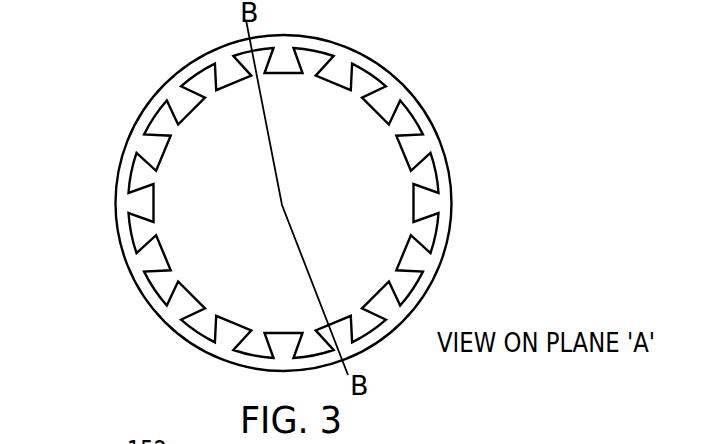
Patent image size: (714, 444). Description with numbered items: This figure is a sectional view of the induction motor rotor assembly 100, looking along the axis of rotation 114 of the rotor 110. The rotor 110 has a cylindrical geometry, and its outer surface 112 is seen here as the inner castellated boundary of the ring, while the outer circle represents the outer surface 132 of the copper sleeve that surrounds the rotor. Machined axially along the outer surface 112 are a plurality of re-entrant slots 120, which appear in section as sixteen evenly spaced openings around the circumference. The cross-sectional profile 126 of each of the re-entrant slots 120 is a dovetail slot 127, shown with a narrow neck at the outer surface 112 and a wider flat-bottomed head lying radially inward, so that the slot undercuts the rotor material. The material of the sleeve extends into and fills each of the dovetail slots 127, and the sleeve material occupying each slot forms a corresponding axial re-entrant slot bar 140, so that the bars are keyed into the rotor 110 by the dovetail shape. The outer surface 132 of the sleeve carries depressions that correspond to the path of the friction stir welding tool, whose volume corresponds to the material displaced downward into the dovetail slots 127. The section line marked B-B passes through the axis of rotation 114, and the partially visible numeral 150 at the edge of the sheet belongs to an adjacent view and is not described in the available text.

The induction motor rotor assembly 100 is at (570, 428).
The rotor 110 is at (348, 117).
The outer surface 112 is at (408, 115).
The axis of rotation 114 is at (282, 207).
The re-entrant slots 120 is at (382, 305).
The cross-sectional profile 126 is at (148, 258).
The dovetail slot 127 is at (133, 200).
The outer surface 132 is at (358, 28).
The axial re-entrant slot bar 140 is at (220, 80).
The element 150 is at (287, 433).